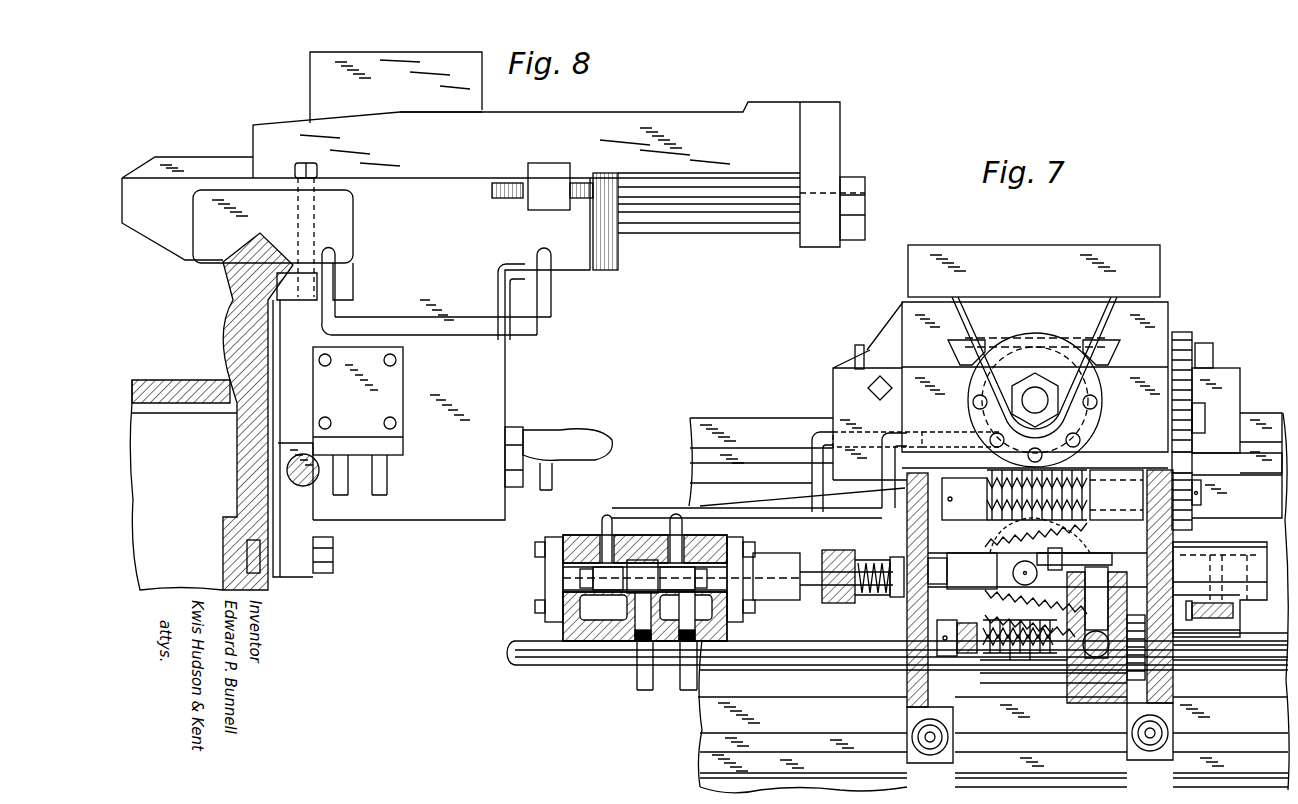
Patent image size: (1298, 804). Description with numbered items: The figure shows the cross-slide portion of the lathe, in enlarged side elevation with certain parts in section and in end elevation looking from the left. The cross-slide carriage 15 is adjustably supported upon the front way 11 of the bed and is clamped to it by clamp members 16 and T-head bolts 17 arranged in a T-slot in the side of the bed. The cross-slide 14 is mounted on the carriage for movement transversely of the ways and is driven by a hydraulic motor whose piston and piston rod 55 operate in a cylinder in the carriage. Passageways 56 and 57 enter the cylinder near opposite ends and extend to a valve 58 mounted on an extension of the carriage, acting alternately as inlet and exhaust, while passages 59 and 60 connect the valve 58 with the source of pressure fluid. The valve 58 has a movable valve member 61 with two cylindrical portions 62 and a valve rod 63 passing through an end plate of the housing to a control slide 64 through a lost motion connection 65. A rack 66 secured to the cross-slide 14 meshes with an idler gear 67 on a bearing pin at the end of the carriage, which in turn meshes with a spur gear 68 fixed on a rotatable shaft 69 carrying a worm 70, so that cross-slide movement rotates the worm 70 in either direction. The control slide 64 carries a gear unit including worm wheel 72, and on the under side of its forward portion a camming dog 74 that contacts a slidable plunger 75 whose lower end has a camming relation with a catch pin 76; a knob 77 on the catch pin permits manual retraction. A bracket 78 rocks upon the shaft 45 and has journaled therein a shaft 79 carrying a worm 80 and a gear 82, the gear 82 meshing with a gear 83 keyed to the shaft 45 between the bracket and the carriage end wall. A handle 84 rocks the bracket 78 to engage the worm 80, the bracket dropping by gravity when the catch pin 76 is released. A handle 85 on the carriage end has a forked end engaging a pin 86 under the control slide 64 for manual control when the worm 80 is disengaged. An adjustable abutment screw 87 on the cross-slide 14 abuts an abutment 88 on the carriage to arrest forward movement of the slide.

In FIG. 8, the way 11 is at (232, 266).
In FIG. 8, the cross-slide 14 is at (613, 126).
In FIG. 8, the cross-slide carriage 15 is at (495, 376).
In FIG. 7, the cross-slide carriage 15 is at (885, 680).
In FIG. 8, the clamp member 16 is at (226, 197).
In FIG. 7, the clamp member 16 is at (840, 385).
In FIG. 8, the T-head bolt 17 is at (336, 554).
In FIG. 7, the T-head bolt 17 is at (948, 728).
In FIG. 8, the shaft 45 is at (305, 487).
In FIG. 7, the shaft 45 is at (525, 668).
In FIG. 8, the piston and piston rod 55 is at (710, 228).
In FIG. 8, the passageway 56 is at (332, 272).
In FIG. 7, the passageway 56 is at (813, 464).
In FIG. 8, the passageway 57 is at (553, 290).
In FIG. 7, the passageway 57 is at (806, 512).
In FIG. 8, the valve 58 is at (396, 376).
In FIG. 7, the valve 58 is at (584, 660).
In FIG. 8, the inlet passage 59 is at (390, 478).
In FIG. 7, the inlet passage 59 is at (640, 686).
In FIG. 8, the exhaust passage 60 is at (350, 482).
In FIG. 7, the exhaust passage 60 is at (684, 686).
In FIG. 7, the movable valve member 61 is at (560, 577).
In FIG. 7, the cylindrical portion 62 is at (643, 576).
In FIG. 7, the valve rod 63 is at (812, 572).
In FIG. 7, the control slide 64 is at (940, 556).
In FIG. 7, the lost motion connection 65 is at (845, 556).
In FIG. 7, the rack 66 is at (1192, 340).
In FIG. 7, the idler gear 67 is at (1194, 385).
In FIG. 7, the spur gear 68 is at (1195, 525).
In FIG. 7, the rotatable shaft 69 is at (1112, 505).
In FIG. 7, the worm 70 is at (1042, 470).
In FIG. 7, the worm wheel 72 is at (1037, 577).
In FIG. 7, the camming dog 74 is at (1050, 576).
In FIG. 7, the slidable plunger 75 is at (1118, 580).
In FIG. 7, the catch pin 76 is at (1093, 703).
In FIG. 8, the knob 77 is at (544, 490).
In FIG. 7, the bracket 78 is at (1038, 690).
In FIG. 7, the shaft 79 is at (1012, 690).
In FIG. 7, the worm 80 is at (1030, 645).
In FIG. 7, the gear 82 is at (1176, 648).
In FIG. 7, the gear 83 is at (1152, 672).
In FIG. 8, the handle 84 is at (603, 451).
In FIG. 7, the handle 84 is at (970, 624).
In FIG. 8, the handle 85 is at (594, 432).
In FIG. 7, the handle 85 is at (1242, 612).
In FIG. 7, the pin 86 is at (1262, 594).
In FIG. 8, the adjustable abutment screw 87 is at (507, 200).
In FIG. 7, the adjustable abutment screw 87 is at (866, 392).
In FIG. 8, the abutment 88 is at (352, 190).
In FIG. 7, the abutment 88 is at (868, 362).